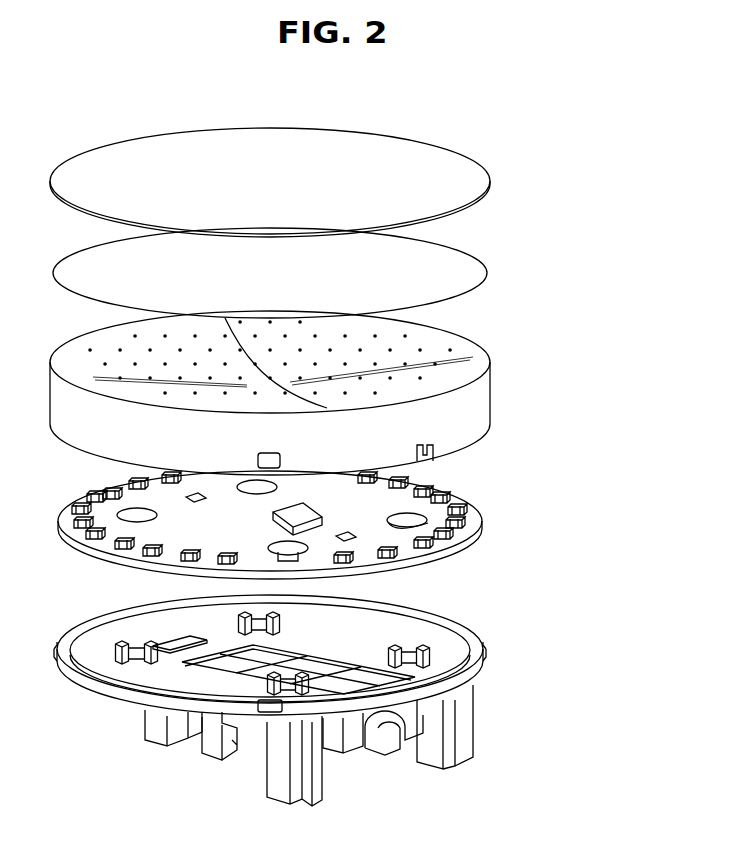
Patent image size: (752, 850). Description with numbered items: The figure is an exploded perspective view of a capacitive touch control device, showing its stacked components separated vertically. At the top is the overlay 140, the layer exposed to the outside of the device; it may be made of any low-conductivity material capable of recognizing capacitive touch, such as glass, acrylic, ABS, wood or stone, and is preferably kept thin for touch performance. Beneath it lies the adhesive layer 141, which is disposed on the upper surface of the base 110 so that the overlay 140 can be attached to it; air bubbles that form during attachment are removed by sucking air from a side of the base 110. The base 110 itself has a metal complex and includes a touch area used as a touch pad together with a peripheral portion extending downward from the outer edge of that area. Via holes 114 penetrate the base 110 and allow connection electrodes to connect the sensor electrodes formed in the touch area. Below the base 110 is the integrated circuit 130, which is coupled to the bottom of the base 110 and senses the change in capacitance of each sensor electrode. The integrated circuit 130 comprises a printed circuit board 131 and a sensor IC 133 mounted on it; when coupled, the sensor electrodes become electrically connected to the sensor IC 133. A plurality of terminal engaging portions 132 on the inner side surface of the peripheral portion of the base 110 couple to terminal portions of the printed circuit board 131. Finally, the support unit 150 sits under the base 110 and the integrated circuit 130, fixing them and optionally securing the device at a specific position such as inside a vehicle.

The base 110 is at (311, 384).
The via holes 114 is at (436, 337).
The integrated circuit 130 is at (337, 518).
The printed circuit board 131 is at (473, 517).
The terminal engaging portions 132 is at (450, 494).
The sensor IC 133 is at (322, 512).
The overlay 140 is at (472, 163).
The adhesive layer 141 is at (473, 254).
The support unit 150 is at (473, 672).